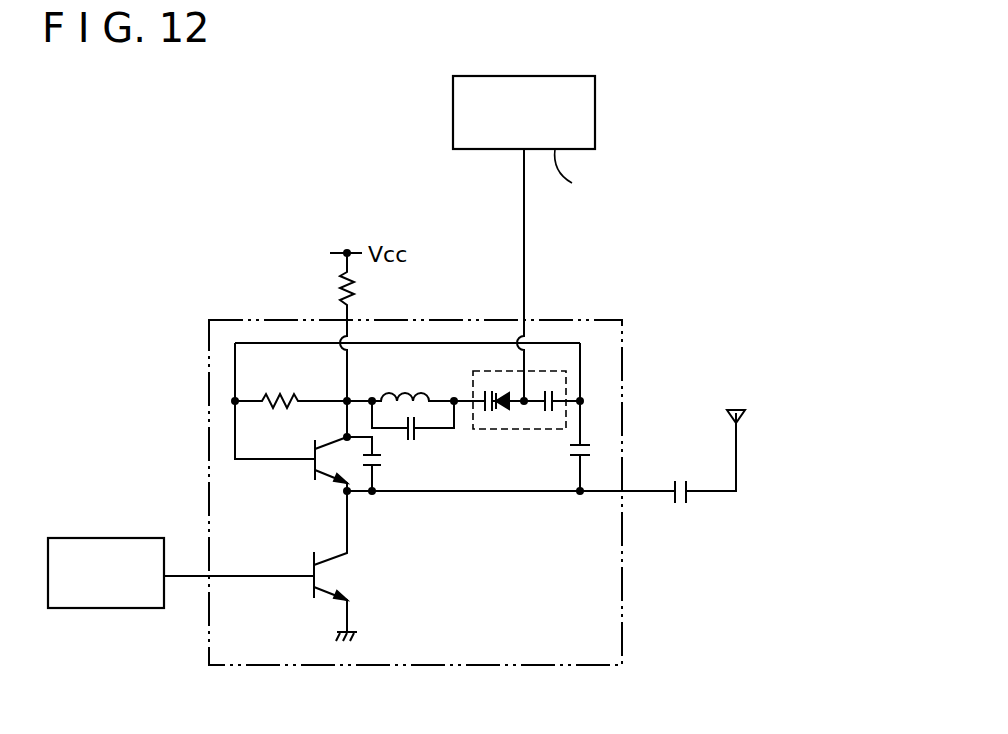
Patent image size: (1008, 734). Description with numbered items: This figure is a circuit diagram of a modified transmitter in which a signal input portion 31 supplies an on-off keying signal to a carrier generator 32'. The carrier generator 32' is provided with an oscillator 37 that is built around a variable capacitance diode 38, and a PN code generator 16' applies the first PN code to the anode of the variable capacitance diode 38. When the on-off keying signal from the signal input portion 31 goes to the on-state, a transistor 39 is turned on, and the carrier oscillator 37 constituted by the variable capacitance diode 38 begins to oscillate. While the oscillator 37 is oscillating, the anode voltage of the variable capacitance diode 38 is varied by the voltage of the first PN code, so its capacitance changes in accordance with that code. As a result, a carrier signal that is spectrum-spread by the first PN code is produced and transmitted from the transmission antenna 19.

The PN code generator 16' is at (645, 238).
The transmission antenna 19 is at (742, 418).
The signal input portion 31 is at (67, 540).
The carrier generator 32' is at (367, 488).
The oscillator 37 is at (441, 446).
The variable capacitance diode 38 is at (505, 410).
The transistor 39 is at (335, 574).